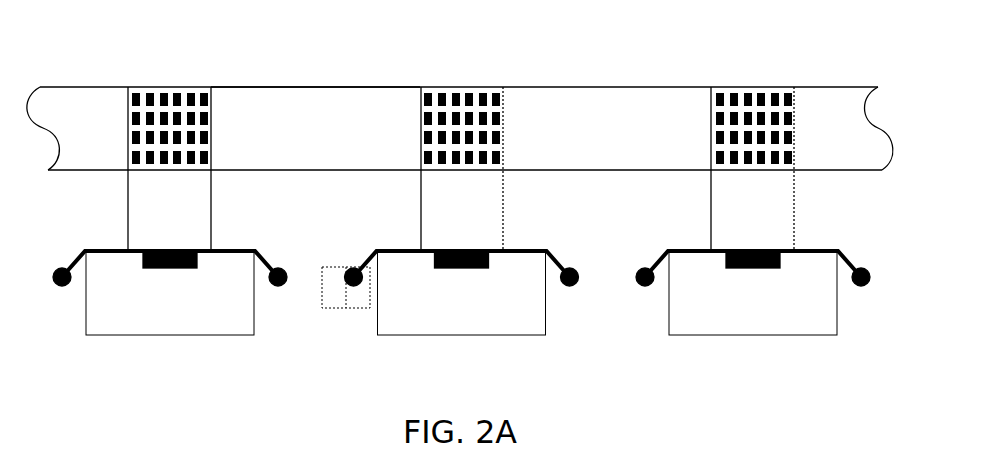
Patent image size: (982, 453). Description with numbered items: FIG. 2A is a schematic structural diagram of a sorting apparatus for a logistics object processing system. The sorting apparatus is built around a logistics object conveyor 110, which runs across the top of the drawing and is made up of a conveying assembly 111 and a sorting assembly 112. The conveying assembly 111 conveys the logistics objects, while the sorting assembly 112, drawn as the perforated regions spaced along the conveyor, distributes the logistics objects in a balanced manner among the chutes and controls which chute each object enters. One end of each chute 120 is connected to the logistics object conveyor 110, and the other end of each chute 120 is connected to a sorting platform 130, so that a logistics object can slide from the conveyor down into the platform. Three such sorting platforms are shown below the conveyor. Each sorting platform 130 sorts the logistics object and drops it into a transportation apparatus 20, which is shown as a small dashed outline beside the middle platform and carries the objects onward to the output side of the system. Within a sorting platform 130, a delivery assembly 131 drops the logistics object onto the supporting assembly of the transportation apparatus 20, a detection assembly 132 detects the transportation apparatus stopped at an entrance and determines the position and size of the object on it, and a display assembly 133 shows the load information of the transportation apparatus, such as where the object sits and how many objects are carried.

The logistics object conveyor 110 is at (648, 87).
The conveying assembly 111 is at (292, 87).
The sorting assembly 112 is at (472, 88).
The chute 120 is at (505, 232).
The sorting platform 130 is at (546, 313).
The delivery assembly 131 is at (173, 310).
The detection assembly 132 is at (285, 267).
The display assembly 133 is at (150, 250).
The transportation apparatus 20 is at (350, 322).